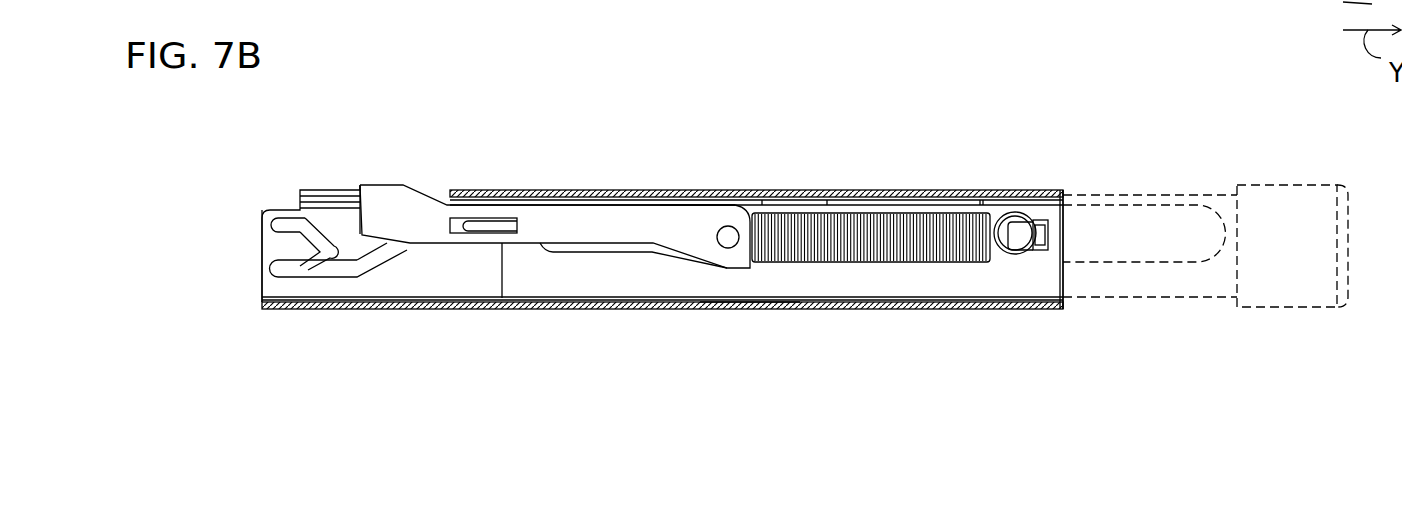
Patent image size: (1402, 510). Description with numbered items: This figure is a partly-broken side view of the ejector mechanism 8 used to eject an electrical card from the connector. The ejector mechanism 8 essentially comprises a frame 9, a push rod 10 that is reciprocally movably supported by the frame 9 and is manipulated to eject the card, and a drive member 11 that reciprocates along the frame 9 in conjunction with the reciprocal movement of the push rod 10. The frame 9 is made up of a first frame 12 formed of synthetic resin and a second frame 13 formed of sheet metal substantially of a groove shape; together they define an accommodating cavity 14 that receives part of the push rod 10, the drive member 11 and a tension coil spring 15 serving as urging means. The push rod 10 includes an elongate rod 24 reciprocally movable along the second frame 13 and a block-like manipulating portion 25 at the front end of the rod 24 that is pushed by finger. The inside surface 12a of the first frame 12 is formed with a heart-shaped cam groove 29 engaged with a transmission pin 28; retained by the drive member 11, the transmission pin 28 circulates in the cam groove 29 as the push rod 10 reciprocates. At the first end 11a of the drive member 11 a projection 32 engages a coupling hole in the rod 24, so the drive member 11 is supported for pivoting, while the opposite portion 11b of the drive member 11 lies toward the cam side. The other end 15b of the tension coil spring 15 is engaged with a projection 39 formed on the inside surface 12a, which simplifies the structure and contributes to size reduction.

The ejector mechanism 8 is at (1068, 143).
The frame 9 is at (753, 310).
The push rod 10 is at (1262, 185).
The drive member 11 is at (597, 213).
The first end of the drive member 11a is at (700, 213).
The lever end portion 11b is at (383, 193).
The first frame 12 is at (840, 277).
The inside surface of the first frame 12a is at (386, 288).
The second frame 13 is at (676, 310).
The accommodating cavity 14 is at (445, 302).
The tension coil spring 15 is at (877, 218).
The other end of the tension coil spring 15b is at (1006, 213).
The rod 24 is at (1138, 297).
The manipulating portion 25 is at (1313, 197).
The transmission pin 28 is at (470, 225).
The cam groove 29 is at (327, 272).
The projection 32 is at (737, 228).
The projection 39 is at (1017, 240).